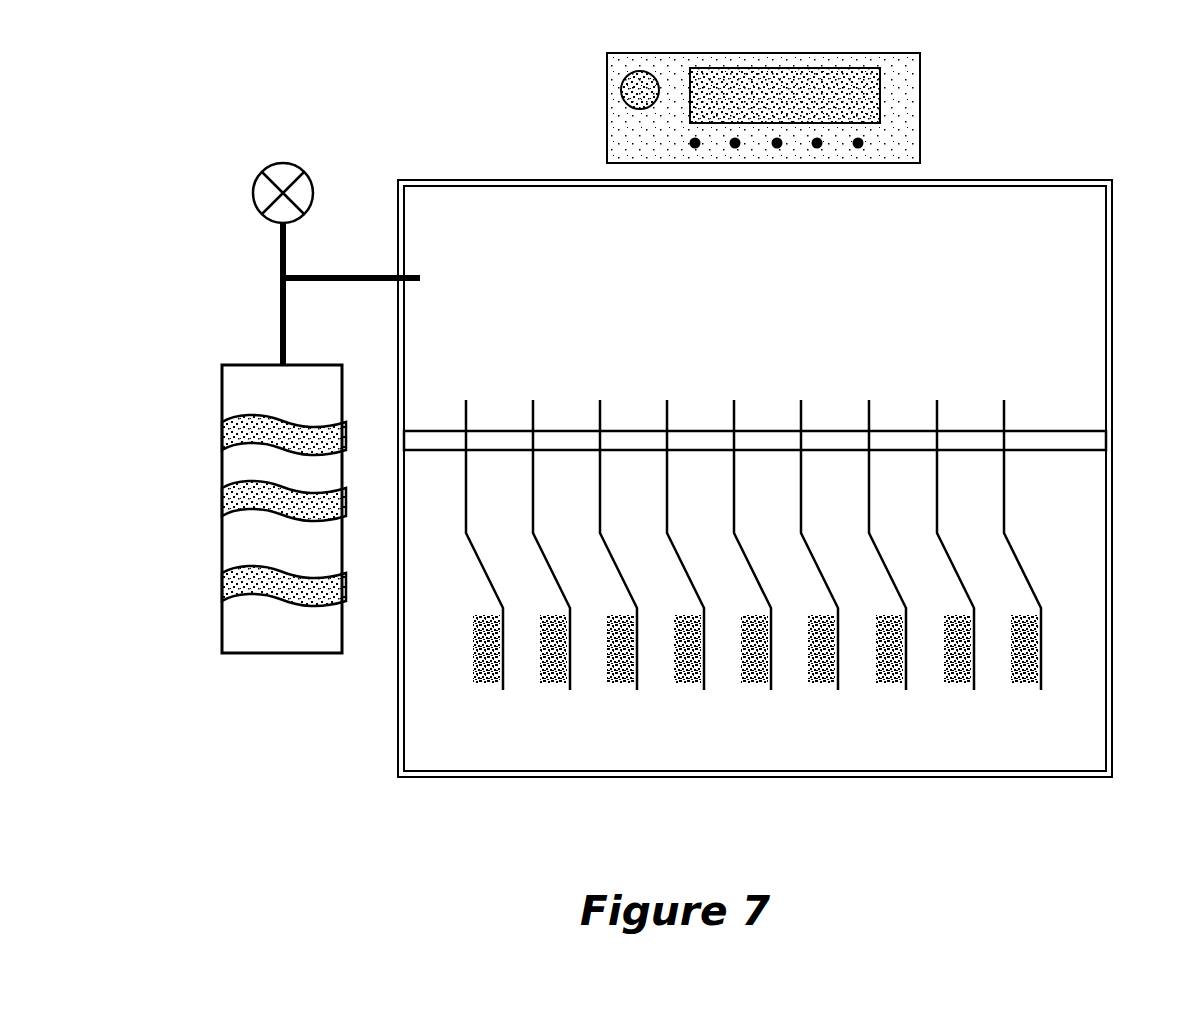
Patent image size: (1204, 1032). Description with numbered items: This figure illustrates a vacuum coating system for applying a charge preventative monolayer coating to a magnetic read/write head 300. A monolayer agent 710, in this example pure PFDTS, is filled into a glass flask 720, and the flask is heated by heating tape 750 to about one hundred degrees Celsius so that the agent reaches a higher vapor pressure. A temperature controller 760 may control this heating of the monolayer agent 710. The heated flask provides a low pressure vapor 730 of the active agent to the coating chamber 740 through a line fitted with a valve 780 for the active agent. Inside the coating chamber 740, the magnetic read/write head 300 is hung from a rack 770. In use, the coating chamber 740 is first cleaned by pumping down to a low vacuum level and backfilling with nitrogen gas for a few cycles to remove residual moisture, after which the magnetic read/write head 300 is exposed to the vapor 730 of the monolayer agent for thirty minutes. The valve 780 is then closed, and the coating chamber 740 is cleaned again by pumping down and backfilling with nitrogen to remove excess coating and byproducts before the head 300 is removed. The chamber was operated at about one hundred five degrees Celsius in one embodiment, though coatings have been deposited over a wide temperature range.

The magnetic read/write head 300 is at (484, 650).
The monolayer agent 710 is at (302, 627).
The glass flask 720 is at (240, 361).
The low pressure vapor 730 is at (1050, 323).
The coating chamber 740 is at (1063, 179).
The heating tape 750 is at (237, 503).
The temperature controller 760 is at (703, 66).
The rack 770 is at (1052, 436).
The valve 780 is at (286, 187).